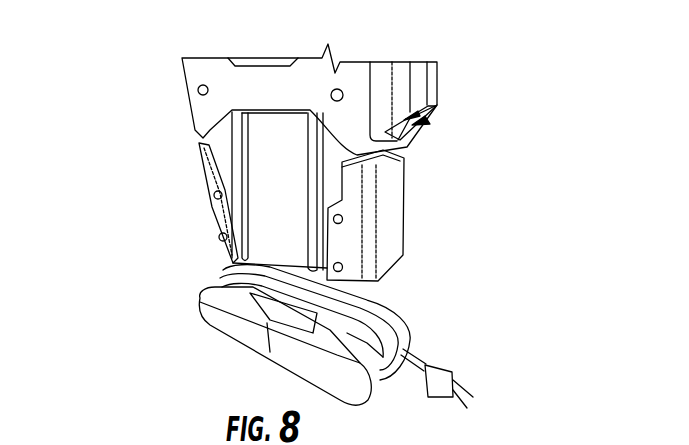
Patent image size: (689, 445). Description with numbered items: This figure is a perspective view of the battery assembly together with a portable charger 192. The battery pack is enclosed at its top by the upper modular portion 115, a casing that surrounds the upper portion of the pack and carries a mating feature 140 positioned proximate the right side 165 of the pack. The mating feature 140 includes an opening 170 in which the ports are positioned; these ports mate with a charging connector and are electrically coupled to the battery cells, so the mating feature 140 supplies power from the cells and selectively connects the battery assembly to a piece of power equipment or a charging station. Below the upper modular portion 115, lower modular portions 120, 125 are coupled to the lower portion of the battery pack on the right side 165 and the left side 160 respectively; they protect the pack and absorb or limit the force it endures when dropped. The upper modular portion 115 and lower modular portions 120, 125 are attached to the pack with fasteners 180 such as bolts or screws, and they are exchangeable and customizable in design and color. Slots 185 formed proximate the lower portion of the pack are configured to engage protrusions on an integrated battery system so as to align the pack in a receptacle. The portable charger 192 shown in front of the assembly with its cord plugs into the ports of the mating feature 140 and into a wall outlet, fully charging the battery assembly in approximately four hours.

The upper modular portion 115 is at (192, 80).
The lower modular portion 120 is at (390, 247).
The lower modular portion 125 is at (217, 227).
The mating feature 140 is at (427, 78).
The left side 160 is at (145, 132).
The right side 165 is at (478, 156).
The opening 170 is at (420, 130).
The fasteners 180 is at (214, 195).
The slots 185 is at (315, 203).
The portable charger 192 is at (262, 350).